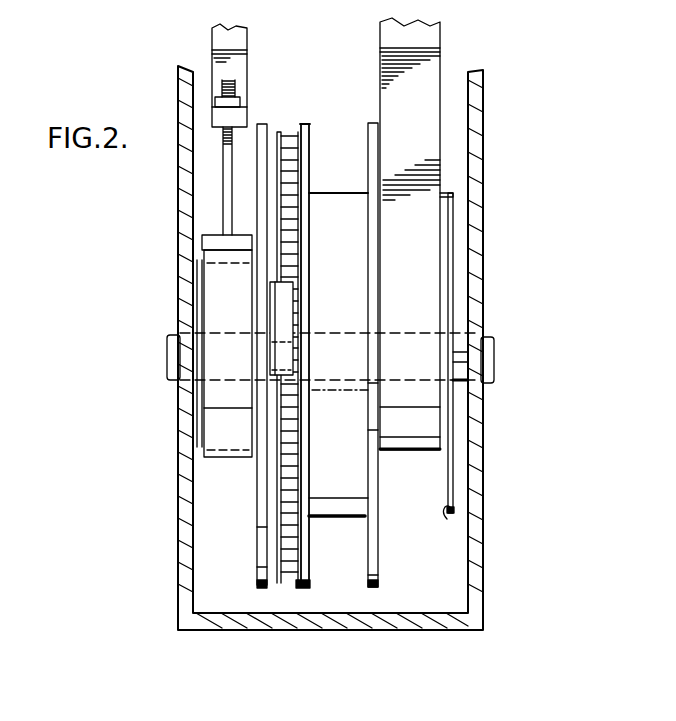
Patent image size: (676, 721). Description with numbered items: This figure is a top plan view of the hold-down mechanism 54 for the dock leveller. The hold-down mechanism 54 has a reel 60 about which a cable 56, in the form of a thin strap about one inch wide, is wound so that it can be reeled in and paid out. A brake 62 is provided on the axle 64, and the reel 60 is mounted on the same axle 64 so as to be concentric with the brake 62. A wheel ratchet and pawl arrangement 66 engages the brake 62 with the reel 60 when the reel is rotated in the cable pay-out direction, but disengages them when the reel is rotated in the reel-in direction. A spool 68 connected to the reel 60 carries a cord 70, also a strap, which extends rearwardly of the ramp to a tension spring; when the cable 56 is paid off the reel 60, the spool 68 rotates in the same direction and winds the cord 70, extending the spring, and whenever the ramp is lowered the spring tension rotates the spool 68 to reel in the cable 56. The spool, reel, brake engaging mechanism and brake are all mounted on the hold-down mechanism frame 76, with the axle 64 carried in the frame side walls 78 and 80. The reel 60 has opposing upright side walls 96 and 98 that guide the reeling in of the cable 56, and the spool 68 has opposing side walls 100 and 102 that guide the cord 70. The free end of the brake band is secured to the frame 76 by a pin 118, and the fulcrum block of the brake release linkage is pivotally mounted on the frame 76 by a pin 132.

The hold-down mechanism 54 is at (497, 241).
The cable 56 is at (336, 495).
The reel 60 is at (314, 156).
The brake 62 is at (220, 416).
The axle 64 is at (167, 358).
The wheel ratchet and pawl arrangement 66 is at (289, 123).
The spool 68 is at (458, 195).
The cord 70 is at (428, 72).
The hold-down mechanism frame 76 is at (481, 448).
The frame side wall 78 is at (483, 320).
The frame side wall 80 is at (190, 295).
The reel side wall 96 is at (364, 582).
The reel side wall 98 is at (306, 578).
The spool side wall 100 is at (447, 519).
The spool side wall 102 is at (372, 541).
The pin 118 is at (195, 258).
The pin 132 is at (180, 118).